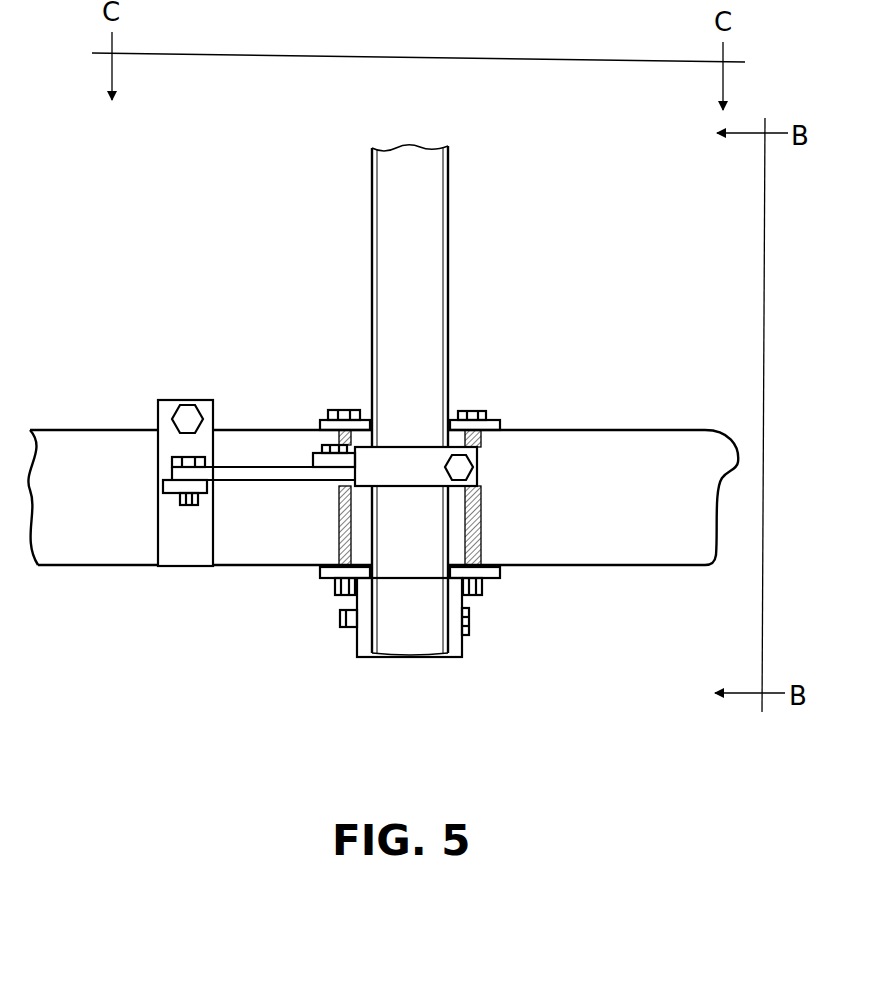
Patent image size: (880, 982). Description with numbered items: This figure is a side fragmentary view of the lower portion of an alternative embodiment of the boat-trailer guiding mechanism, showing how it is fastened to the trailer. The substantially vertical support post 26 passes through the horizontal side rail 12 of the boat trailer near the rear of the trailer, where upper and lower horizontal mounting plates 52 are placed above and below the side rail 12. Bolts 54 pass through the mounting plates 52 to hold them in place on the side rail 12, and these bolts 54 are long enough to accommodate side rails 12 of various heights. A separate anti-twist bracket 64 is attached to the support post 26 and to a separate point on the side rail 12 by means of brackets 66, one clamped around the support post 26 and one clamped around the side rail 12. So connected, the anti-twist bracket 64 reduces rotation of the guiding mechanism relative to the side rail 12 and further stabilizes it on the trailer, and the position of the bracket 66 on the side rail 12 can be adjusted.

The side rail 12 is at (600, 567).
The support post 26 is at (423, 277).
The mounting plates 52 is at (500, 422).
The bolts 54 is at (345, 409).
The anti-twist bracket 64 is at (255, 466).
The brackets 66 is at (418, 487).